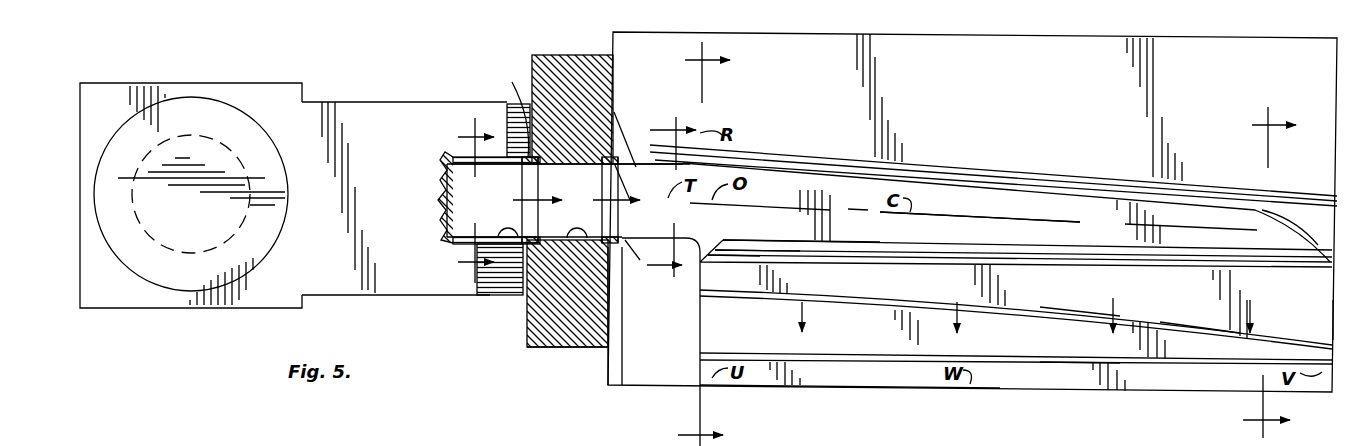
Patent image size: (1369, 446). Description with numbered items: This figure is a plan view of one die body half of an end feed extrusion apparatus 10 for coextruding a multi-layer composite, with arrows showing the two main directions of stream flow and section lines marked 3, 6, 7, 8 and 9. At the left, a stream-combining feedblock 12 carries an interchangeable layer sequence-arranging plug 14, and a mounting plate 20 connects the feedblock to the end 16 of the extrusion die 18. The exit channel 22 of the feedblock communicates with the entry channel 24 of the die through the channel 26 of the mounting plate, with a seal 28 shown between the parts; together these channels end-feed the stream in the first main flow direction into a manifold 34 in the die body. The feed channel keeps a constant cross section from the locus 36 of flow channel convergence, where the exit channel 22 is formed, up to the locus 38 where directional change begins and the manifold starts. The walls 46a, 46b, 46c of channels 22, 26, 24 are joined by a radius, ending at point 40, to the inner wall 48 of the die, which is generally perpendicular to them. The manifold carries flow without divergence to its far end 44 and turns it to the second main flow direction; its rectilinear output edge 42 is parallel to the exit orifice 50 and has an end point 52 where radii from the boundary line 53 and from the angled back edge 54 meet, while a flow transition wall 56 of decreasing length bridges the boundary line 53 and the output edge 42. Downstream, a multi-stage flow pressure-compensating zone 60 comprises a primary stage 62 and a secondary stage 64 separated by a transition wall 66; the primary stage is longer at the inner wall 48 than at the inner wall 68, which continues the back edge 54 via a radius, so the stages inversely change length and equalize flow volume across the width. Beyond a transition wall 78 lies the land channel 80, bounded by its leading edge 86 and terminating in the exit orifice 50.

The section line 3 is at (666, 228).
The section line 6- 6 is at (464, 200).
The section line 7- 7 is at (655, 194).
The section line 8- 8 is at (693, 244).
The section line 9- 9 is at (1259, 272).
The end feed extrusion apparatus 10 is at (205, 56).
The stream-combining feedblock 12 is at (397, 100).
The layer sequence-arranging plug 14 is at (272, 236).
The end of extrusion die 16 is at (608, 370).
The extrusion die 18 is at (620, 394).
The mounting plate 20 is at (530, 348).
The exit channel of feedblock 22 is at (492, 203).
The entry channel of extrusion die 24 is at (572, 109).
The channel of mounting plate 26 is at (572, 162).
The seal ring 28 is at (504, 110).
The manifold 34 is at (805, 183).
The locus of flow channel convergence 36 is at (438, 212).
The locus at which feed channel ends 38 is at (718, 238).
The point 40 is at (710, 260).
The output edge of manifold 42 is at (862, 243).
The far end of manifold 44 is at (1320, 222).
The wall of channel 22 46a is at (512, 262).
The wall of channel 26 46b is at (567, 293).
The wall of channel 24 46c is at (628, 240).
The inner wall of extrusion die 48 is at (700, 340).
The exit orifice 50 is at (922, 394).
The end point 52 is at (1330, 268).
The boundary line of manifold 53 is at (988, 252).
The back edge of manifold 54 is at (955, 185).
The flow transition wall 56 is at (1052, 233).
The multi-stage flow pressure-compensating zone 60 is at (718, 308).
The primary flow pressure-compensating stage 62 is at (753, 308).
The secondary flow pressure-compensating stage 64 is at (1200, 312).
The transition wall 66 is at (1090, 310).
The inner wall of extrusion die 68 is at (1332, 322).
The transition wall 78 is at (990, 375).
The land channel 80 is at (828, 378).
The leading edge of land channel 86 is at (1067, 366).